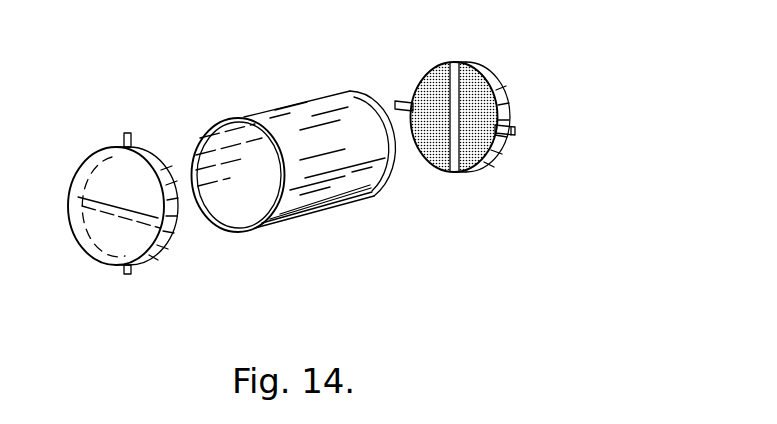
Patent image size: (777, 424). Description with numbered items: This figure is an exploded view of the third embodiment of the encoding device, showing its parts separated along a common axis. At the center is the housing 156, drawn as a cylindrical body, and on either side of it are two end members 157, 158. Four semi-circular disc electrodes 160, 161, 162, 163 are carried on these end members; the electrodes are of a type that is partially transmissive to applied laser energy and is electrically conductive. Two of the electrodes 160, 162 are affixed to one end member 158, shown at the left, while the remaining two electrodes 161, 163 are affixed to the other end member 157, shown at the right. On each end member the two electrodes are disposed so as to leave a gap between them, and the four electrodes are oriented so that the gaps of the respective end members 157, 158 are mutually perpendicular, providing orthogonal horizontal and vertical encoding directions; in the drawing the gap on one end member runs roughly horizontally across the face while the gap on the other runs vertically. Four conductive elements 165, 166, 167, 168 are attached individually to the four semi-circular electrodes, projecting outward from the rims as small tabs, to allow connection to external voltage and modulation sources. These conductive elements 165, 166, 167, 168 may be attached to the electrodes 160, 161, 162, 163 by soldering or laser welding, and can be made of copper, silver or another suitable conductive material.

The housing 156 is at (244, 228).
The end member 157 is at (497, 160).
The end member 158 is at (171, 243).
The semi-circular disc electrode 160 is at (108, 245).
The semi-circular disc electrode 161 is at (452, 62).
The semi-circular disc electrode 162 is at (113, 165).
The semi-circular disc electrode 163 is at (437, 76).
The conductive element 165 is at (128, 274).
The conductive element 166 is at (515, 130).
The conductive element 167 is at (127, 133).
The conductive element 168 is at (406, 102).